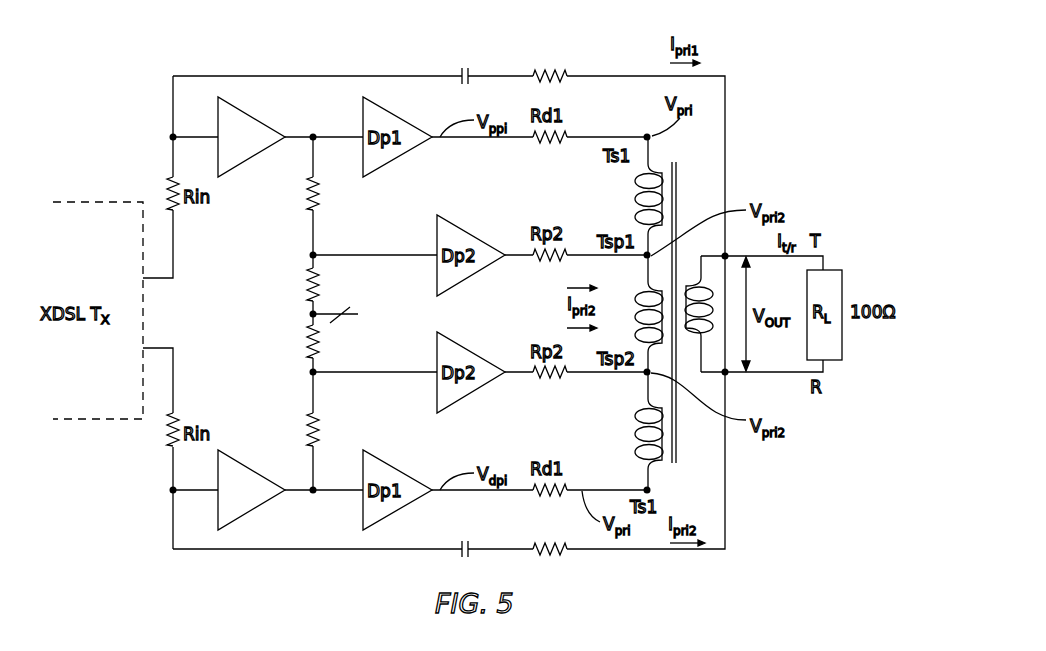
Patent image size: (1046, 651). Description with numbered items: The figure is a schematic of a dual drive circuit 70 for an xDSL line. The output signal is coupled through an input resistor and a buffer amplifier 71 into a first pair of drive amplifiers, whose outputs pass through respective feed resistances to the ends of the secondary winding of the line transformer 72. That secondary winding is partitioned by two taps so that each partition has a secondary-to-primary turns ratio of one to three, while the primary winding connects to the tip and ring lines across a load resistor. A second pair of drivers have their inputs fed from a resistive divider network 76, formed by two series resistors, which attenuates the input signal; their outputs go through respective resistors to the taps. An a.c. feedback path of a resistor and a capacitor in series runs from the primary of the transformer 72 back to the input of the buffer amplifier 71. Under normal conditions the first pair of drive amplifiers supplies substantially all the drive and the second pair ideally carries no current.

The dual drive circuit 70 is at (797, 544).
The buffer amplifier 71 is at (249, 160).
The line transformer 72 is at (680, 456).
The resistive divider network 76 is at (279, 324).